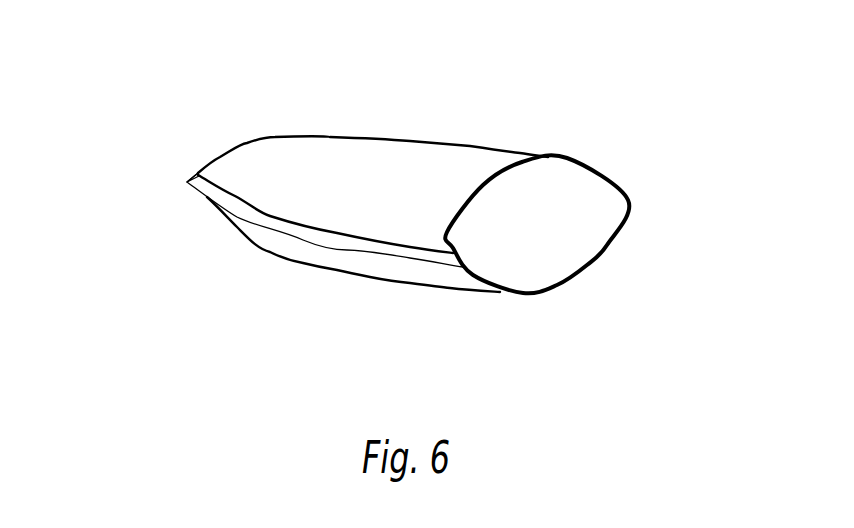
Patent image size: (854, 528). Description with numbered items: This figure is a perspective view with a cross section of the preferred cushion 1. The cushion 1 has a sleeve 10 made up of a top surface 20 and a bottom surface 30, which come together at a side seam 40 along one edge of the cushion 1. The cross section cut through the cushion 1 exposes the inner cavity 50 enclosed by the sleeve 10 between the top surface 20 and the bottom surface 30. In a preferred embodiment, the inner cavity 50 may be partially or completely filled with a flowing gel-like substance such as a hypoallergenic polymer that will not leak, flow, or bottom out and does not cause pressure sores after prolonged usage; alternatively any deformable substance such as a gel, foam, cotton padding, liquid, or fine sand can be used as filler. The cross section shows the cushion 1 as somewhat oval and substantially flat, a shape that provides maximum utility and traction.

The cushion 1 is at (481, 71).
The sleeve 10 is at (167, 134).
The top surface 20 is at (337, 158).
The bottom surface 30 is at (365, 263).
The side seam 40 is at (208, 188).
The inner cavity 50 is at (543, 230).